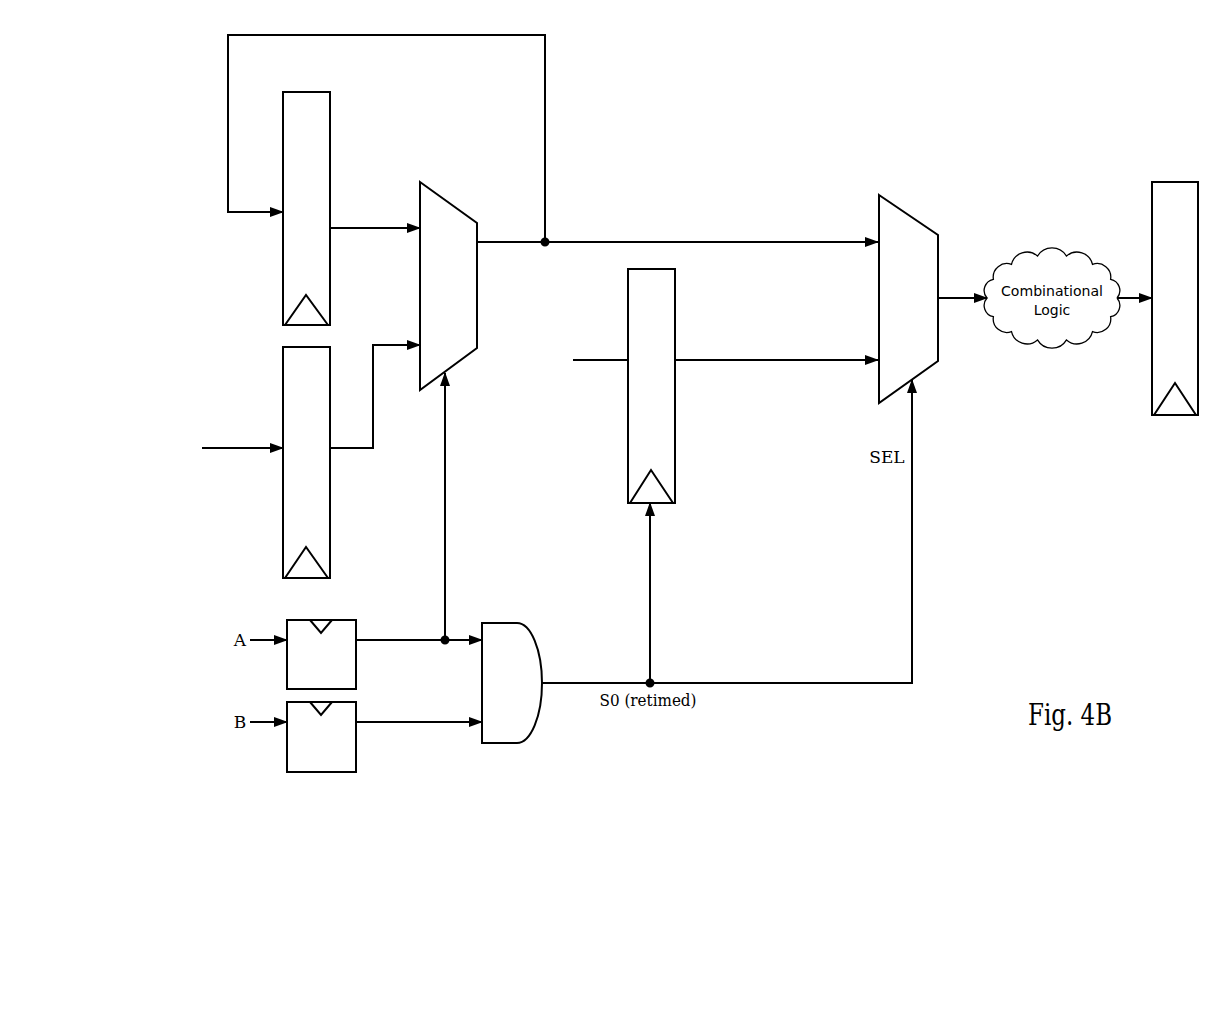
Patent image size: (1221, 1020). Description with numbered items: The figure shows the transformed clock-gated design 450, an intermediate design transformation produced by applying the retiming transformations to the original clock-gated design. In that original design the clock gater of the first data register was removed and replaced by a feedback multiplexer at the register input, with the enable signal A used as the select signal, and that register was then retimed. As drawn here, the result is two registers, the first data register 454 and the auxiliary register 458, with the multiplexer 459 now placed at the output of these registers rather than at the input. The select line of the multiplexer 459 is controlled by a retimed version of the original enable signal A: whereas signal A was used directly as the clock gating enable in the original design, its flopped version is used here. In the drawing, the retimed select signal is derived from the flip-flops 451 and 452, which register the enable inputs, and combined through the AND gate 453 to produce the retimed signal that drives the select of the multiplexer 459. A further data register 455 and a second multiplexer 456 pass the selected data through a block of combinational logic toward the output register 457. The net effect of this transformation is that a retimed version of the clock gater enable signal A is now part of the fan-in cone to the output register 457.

The transformed clock-gated design 450 is at (978, 123).
The flip-flop for input A 451 is at (350, 610).
The flip-flop for input B 452 is at (357, 760).
The AND gate 453 is at (517, 617).
The register D1 454 is at (333, 530).
The register D0 455 is at (622, 434).
The multiplexer 456 is at (889, 197).
The register P1 457 is at (1177, 182).
The register X1 458 is at (295, 90).
The multiplexer 459 is at (428, 184).